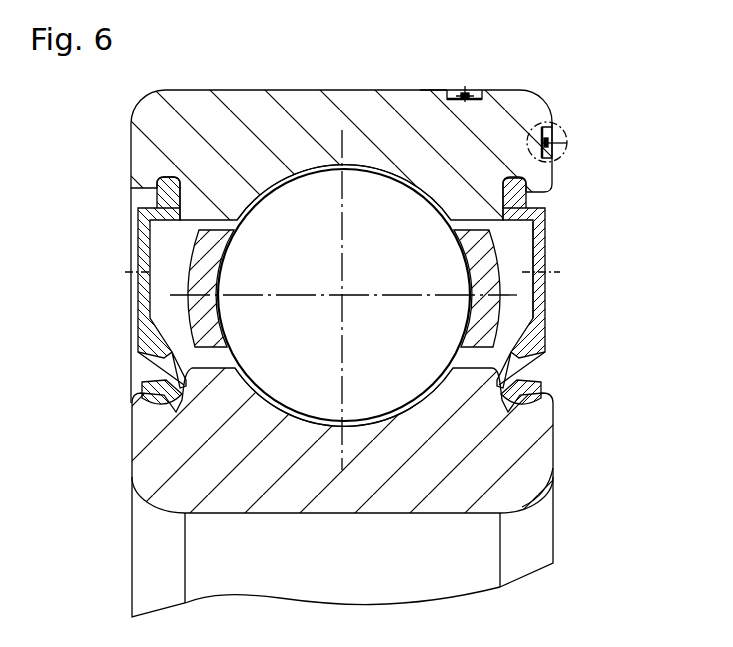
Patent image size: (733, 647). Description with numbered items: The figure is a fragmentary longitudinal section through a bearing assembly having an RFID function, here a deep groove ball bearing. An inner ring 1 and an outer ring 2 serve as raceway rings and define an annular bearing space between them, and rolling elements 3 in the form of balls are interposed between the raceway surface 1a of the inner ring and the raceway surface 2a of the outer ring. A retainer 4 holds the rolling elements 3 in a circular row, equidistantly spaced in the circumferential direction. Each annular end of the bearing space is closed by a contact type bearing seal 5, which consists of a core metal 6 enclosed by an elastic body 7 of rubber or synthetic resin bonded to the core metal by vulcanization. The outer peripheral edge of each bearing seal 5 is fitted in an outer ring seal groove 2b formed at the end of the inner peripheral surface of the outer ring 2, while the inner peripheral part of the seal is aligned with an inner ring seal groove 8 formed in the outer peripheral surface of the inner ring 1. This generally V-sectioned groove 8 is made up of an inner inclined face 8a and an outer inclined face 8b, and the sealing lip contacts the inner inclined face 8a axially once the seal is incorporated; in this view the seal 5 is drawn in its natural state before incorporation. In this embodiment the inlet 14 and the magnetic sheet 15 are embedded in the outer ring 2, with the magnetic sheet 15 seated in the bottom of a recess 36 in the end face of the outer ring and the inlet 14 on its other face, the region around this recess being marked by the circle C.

The inner ring 1 is at (407, 493).
The raceway surface of the inner ring 1a is at (333, 423).
The outer ring 2 is at (318, 122).
The raceway surface of the outer ring 2a is at (297, 186).
The outer ring seal groove 2b is at (150, 190).
The rolling element 3 is at (301, 270).
The retainer 4 is at (195, 299).
The bearing seal 5 is at (140, 258).
The core metal 6 is at (547, 293).
The elastic body 7 is at (547, 253).
The inner ring seal groove 8 is at (140, 398).
The inner inclined face 8a is at (540, 378).
The outer inclined face 8b is at (540, 406).
The inlet 14 is at (470, 88).
The magnetic sheet 15 is at (433, 95).
The recess 36 is at (483, 91).
The portion encompassed by circle C is at (563, 130).